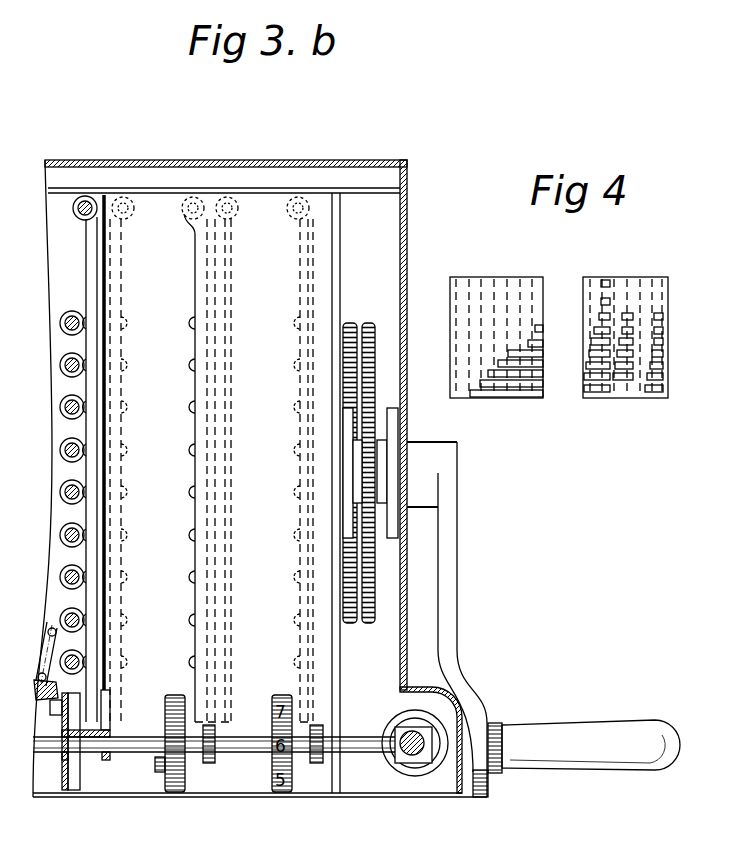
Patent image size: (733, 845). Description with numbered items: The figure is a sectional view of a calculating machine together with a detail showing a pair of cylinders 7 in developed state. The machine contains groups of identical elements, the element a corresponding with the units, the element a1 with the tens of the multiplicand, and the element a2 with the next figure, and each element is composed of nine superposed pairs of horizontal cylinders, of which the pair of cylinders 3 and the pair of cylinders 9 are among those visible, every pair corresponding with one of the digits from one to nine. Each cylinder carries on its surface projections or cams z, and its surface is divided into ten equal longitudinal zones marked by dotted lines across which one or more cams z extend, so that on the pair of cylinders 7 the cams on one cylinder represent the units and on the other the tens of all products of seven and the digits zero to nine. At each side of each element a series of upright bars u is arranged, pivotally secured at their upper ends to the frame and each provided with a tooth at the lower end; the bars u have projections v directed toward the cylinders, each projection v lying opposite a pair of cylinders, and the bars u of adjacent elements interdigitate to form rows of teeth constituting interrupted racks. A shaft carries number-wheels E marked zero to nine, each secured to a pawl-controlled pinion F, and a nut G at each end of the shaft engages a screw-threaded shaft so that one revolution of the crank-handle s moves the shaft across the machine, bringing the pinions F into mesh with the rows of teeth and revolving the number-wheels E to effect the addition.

In FIG. 3b, the element a2 is at (76, 459).
In FIG. 3b, the element a1 is at (194, 459).
In FIG. 3b, the element a is at (287, 459).
In FIG. 3b, the projection v is at (122, 328).
In FIG. 3b, the upright bar u is at (106, 436).
In FIG. 3b, the pair of horizontal cylinders 3 is at (70, 405).
In FIG. 3b, the pair of horizontal cylinders 7 is at (68, 577).
In FIG. 4, the pair of horizontal cylinders 7 is at (583, 300).
In FIG. 3b, the pair of horizontal cylinders 9 is at (40, 680).
In FIG. 3b, the pinion F is at (100, 762).
In FIG. 3b, the number-wheel E is at (185, 777).
In FIG. 3b, the nut G is at (405, 727).
In FIG. 3b, the crank-handle s is at (600, 732).
In FIG. 4, the cam z is at (662, 316).